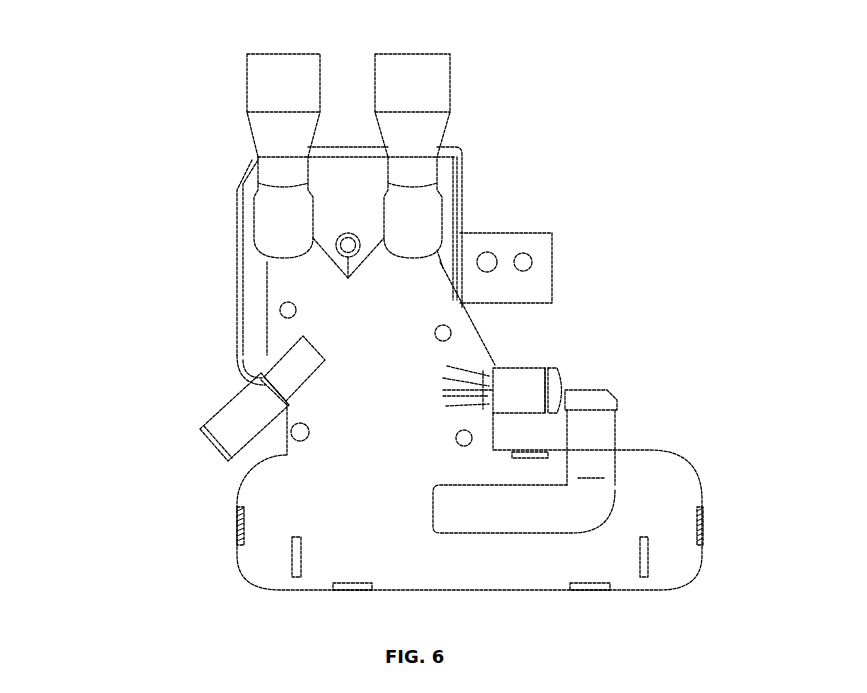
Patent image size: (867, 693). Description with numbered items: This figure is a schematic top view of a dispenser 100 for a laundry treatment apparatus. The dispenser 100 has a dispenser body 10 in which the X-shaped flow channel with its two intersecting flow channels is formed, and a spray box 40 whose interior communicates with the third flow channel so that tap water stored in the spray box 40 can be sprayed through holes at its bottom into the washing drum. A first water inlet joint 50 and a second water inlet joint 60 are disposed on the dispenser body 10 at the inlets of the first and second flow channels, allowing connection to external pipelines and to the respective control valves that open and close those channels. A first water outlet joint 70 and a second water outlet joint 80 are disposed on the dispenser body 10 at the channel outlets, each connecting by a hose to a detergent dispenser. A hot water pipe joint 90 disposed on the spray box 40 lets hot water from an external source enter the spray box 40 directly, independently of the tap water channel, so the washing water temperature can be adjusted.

The dispenser 100 is at (133, 80).
The dispenser body 10 is at (290, 287).
The second water inlet joint 60 is at (275, 125).
The first water inlet joint 50 is at (423, 130).
The first water outlet joint 70 is at (245, 415).
The second water outlet joint 80 is at (548, 375).
The hot water pipe joint 90 is at (598, 430).
The spray box 40 is at (670, 560).